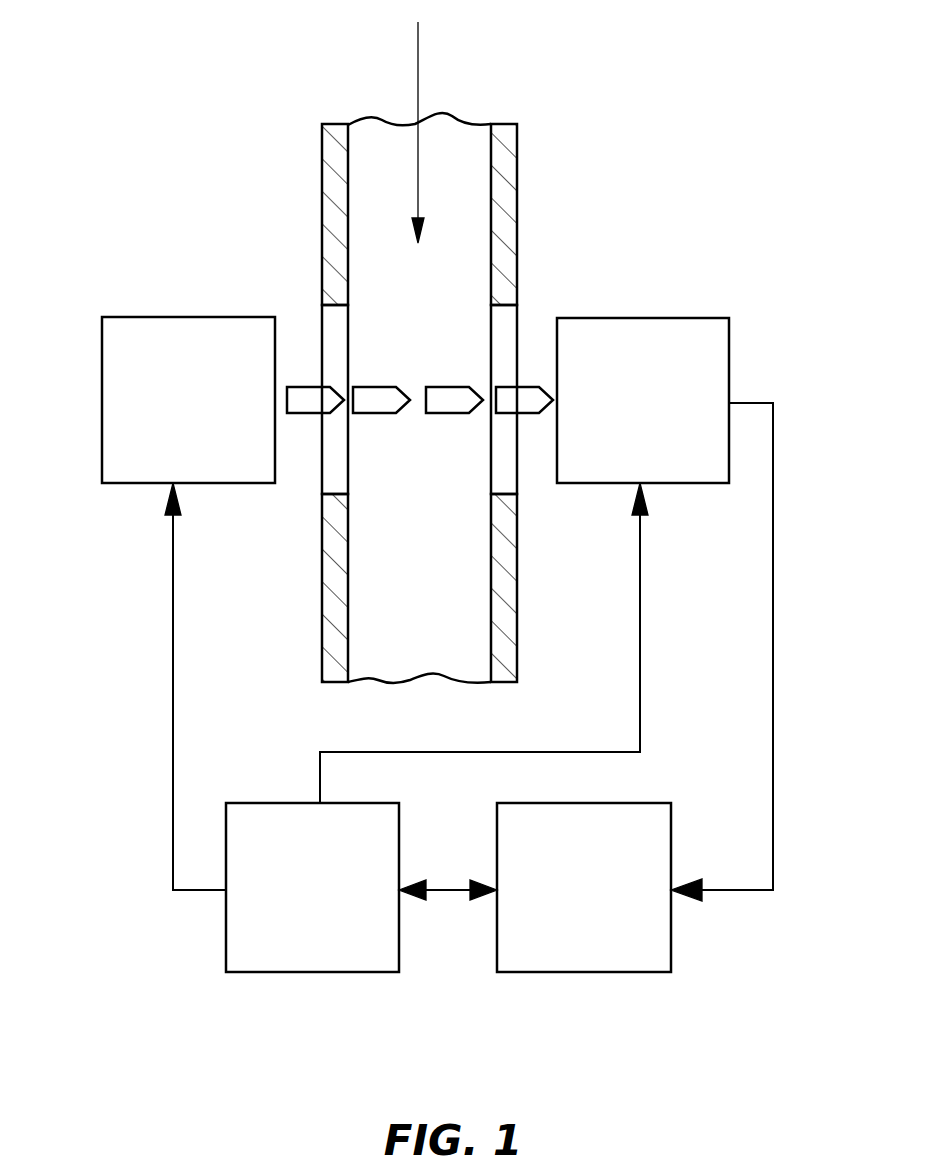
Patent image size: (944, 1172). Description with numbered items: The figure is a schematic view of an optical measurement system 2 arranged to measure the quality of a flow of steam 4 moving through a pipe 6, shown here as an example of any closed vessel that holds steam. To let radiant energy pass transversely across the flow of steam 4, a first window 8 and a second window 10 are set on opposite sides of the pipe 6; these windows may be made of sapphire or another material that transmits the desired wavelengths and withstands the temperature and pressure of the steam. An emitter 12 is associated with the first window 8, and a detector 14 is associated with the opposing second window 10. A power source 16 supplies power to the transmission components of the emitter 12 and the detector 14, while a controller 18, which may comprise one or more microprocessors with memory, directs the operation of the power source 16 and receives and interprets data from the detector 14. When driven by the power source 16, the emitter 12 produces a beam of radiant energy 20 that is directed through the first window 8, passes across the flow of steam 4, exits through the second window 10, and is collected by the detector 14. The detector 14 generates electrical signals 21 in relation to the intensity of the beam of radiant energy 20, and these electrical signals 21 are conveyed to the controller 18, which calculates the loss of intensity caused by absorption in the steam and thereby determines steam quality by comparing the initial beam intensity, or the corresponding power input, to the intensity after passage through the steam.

The optical measurement system 2 is at (145, 150).
The flow of steam 4 is at (418, 121).
The pipe 6 is at (518, 184).
The first window 8 is at (321, 342).
The second window 10 is at (518, 332).
The emitter 12 is at (188, 400).
The detector 14 is at (643, 400).
The power source 16 is at (312, 887).
The controller 18 is at (584, 887).
The beam of radiant energy 20 is at (457, 387).
The electrical signals 21 is at (773, 627).